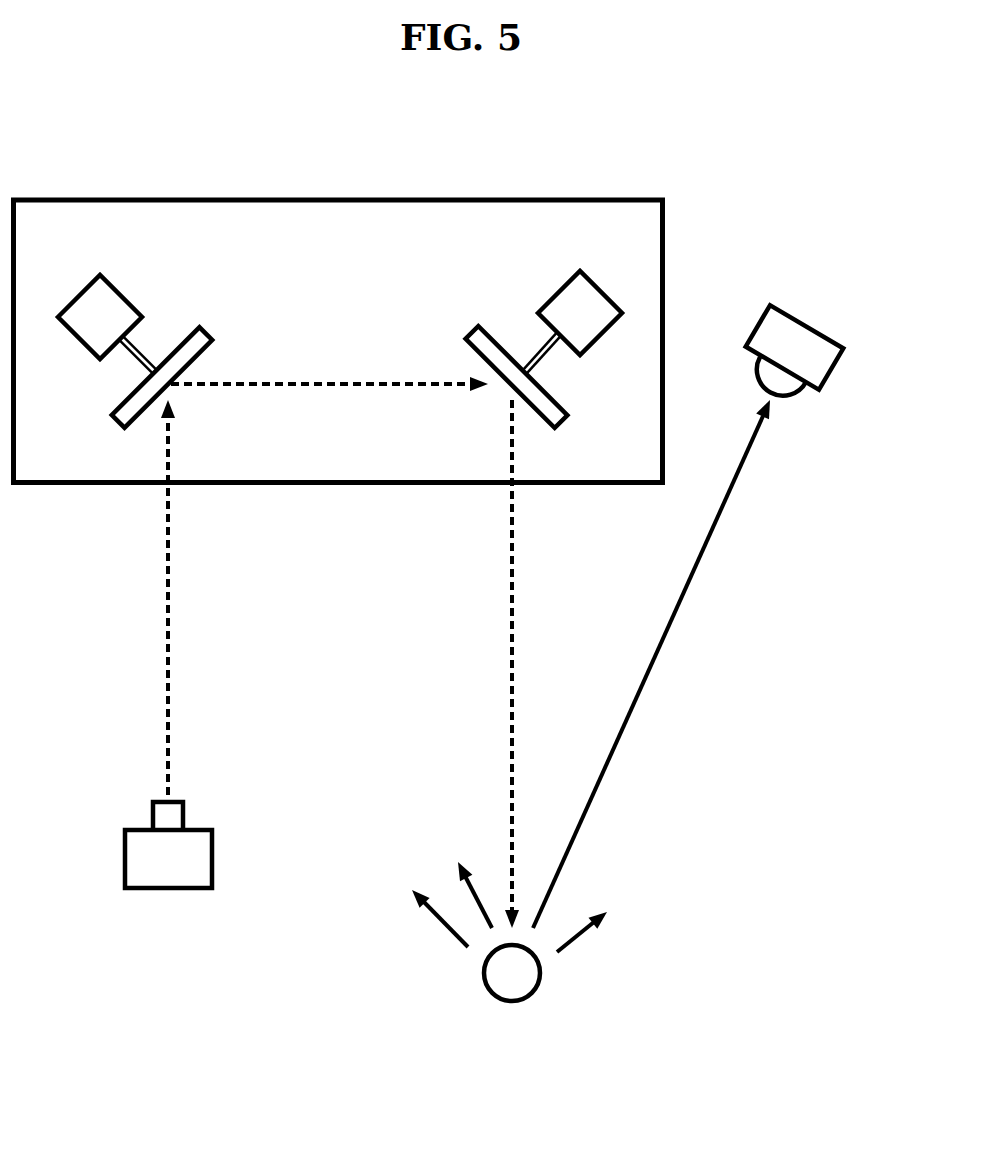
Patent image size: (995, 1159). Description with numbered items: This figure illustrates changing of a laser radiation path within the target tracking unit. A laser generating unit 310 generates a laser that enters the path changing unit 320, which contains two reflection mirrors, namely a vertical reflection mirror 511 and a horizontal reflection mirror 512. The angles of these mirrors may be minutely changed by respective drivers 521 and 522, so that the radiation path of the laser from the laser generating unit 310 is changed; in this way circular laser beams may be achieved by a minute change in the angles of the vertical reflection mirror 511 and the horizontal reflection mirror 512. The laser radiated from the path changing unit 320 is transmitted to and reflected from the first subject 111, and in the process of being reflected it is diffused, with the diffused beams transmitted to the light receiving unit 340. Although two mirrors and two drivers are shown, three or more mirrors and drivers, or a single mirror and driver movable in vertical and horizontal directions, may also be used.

The path changing unit 320 is at (343, 198).
The driver 521 is at (127, 297).
The vertical reflection mirror 511 is at (213, 333).
The driver 522 is at (553, 297).
The horizontal reflection mirror 512 is at (473, 327).
The light receiving unit 340 is at (805, 322).
The laser generating unit 310 is at (162, 889).
The first subject 111 is at (505, 1002).